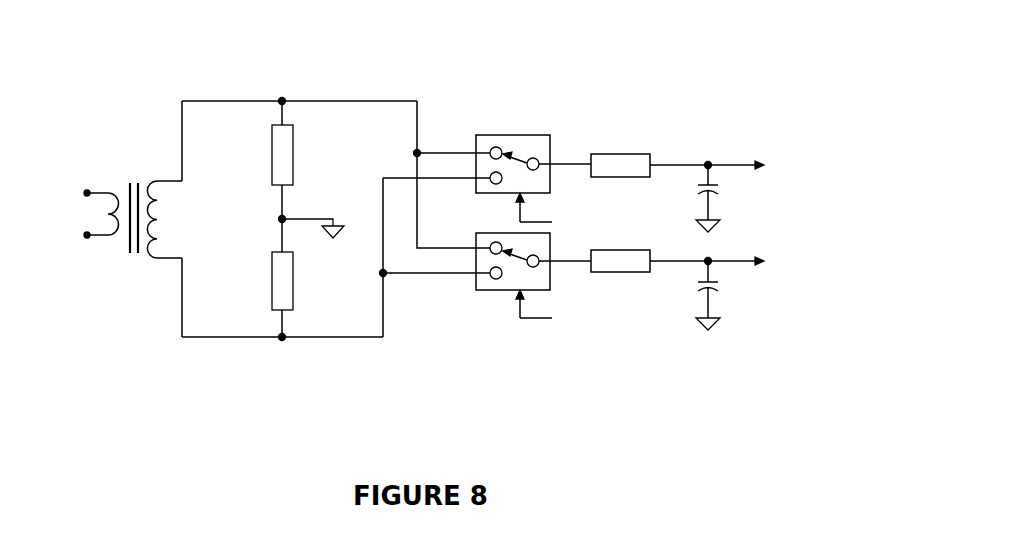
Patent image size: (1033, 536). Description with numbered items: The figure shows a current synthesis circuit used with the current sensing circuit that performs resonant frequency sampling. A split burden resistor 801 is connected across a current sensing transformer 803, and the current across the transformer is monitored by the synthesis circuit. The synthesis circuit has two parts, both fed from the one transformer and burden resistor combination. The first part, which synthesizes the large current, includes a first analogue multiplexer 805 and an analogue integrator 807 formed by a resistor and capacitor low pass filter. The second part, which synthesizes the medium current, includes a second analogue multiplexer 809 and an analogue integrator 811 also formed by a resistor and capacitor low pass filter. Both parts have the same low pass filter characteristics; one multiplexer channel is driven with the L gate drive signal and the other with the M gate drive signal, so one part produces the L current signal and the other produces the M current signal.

The split Burden resistor 801 is at (317, 178).
The current sensing transformer (CT) 803 is at (98, 161).
The first analogue multiplexer (4053) 805 is at (565, 128).
The analogue integrator 807 is at (735, 154).
The second analogue multiplexer (4053) 809 is at (541, 316).
The analogue integrator 811 is at (737, 334).